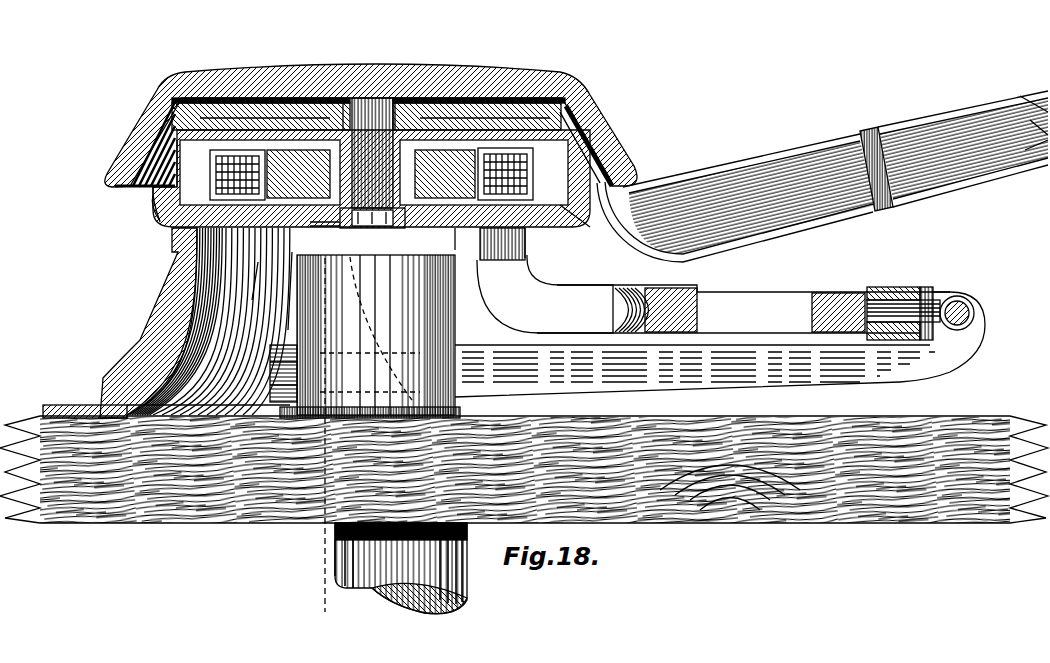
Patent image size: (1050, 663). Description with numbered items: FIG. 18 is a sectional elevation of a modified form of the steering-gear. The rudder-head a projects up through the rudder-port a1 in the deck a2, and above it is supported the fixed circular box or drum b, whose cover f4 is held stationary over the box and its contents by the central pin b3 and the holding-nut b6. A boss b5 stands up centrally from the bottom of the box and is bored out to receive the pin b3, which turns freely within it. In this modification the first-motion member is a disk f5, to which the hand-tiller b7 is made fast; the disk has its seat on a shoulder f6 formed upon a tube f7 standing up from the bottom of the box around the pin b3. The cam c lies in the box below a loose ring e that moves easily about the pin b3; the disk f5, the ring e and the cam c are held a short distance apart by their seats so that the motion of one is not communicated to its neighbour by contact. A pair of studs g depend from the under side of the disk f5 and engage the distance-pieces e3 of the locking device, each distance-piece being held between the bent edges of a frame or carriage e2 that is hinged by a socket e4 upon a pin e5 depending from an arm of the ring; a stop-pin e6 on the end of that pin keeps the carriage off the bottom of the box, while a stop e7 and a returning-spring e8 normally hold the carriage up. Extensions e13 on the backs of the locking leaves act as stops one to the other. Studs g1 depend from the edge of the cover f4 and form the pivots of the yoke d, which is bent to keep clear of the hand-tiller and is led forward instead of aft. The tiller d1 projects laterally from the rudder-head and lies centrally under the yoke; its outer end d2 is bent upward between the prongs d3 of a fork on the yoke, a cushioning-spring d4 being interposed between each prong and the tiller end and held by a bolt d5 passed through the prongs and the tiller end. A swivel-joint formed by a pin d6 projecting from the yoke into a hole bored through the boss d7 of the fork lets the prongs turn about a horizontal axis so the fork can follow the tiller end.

The rudder-head a is at (468, 566).
The rudder-port a1 is at (321, 522).
The deck a2 is at (832, 512).
The fixed circular box or drum b is at (153, 200).
The pin b3 is at (372, 153).
The boss b5 is at (326, 228).
The holding-nut b6 is at (390, 229).
The hand-tiller b7 is at (957, 125).
The cam c is at (371, 174).
The yoke d is at (690, 294).
The tiller d1 is at (695, 371).
The tiller end d2 is at (946, 362).
The prongs of fork d3 is at (928, 290).
The cushioning-spring d4 is at (963, 297).
The bolt d5 is at (975, 313).
The pin d6 is at (876, 287).
The boss of the fork d7 is at (892, 300).
The loose ring e is at (304, 277).
The frame or carriage e2 is at (208, 321).
The distance-piece e3 is at (258, 274).
The socket e4 is at (294, 283).
The pin e5 is at (494, 244).
The stop-pin e6 is at (501, 243).
The stop e7 is at (158, 212).
The returning-spring e8 is at (175, 232).
The extensions e13 is at (566, 224).
The cover f4 is at (418, 66).
The disk f5 is at (278, 120).
The shoulder f6 is at (343, 97).
The tube f7 is at (450, 241).
The studs g is at (248, 78).
The studs g1 is at (470, 255).